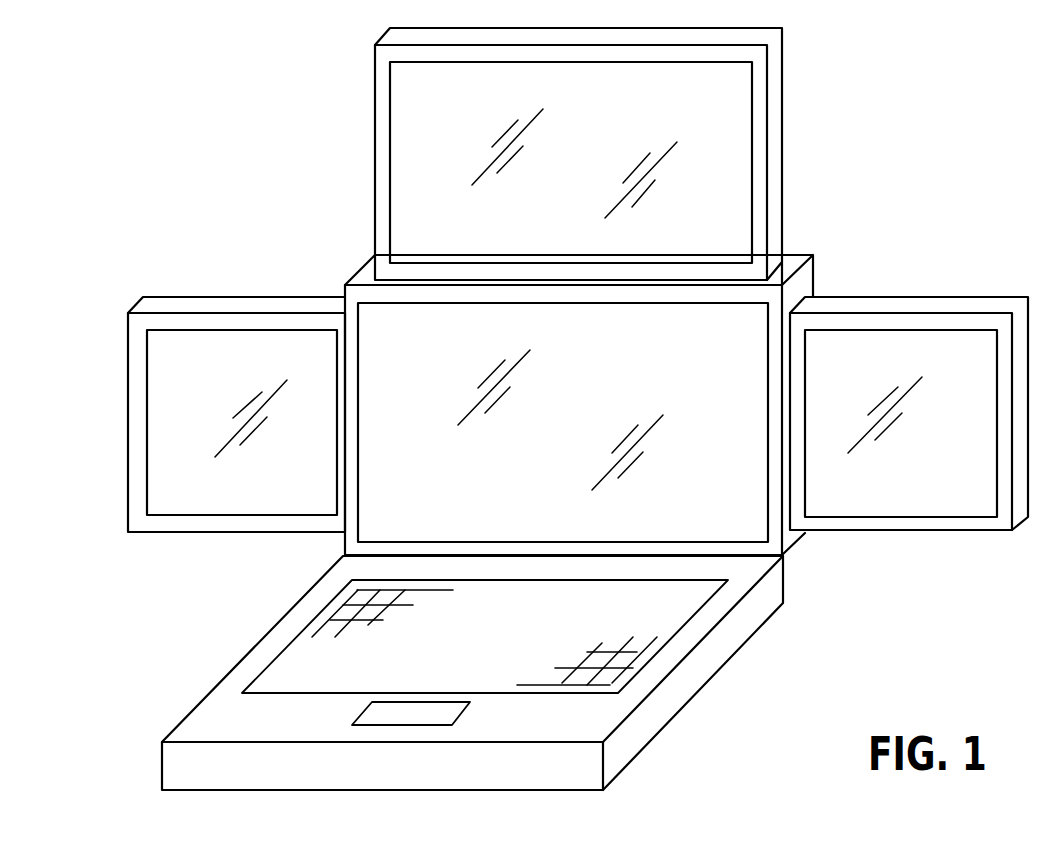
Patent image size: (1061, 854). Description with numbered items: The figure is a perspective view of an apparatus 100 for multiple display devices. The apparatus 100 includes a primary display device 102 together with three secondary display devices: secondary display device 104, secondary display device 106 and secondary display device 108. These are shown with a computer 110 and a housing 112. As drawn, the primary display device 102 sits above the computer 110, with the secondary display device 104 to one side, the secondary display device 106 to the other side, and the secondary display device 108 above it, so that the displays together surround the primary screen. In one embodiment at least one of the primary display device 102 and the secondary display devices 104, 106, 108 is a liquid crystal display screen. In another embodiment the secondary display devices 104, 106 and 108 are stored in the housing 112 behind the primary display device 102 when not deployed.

The apparatus 100 is at (883, 203).
The primary display device 102 is at (731, 515).
The secondary display device 104 is at (218, 502).
The secondary display device 106 is at (982, 497).
The secondary display device 108 is at (740, 243).
The computer 110 is at (265, 650).
The housing 112 is at (360, 275).